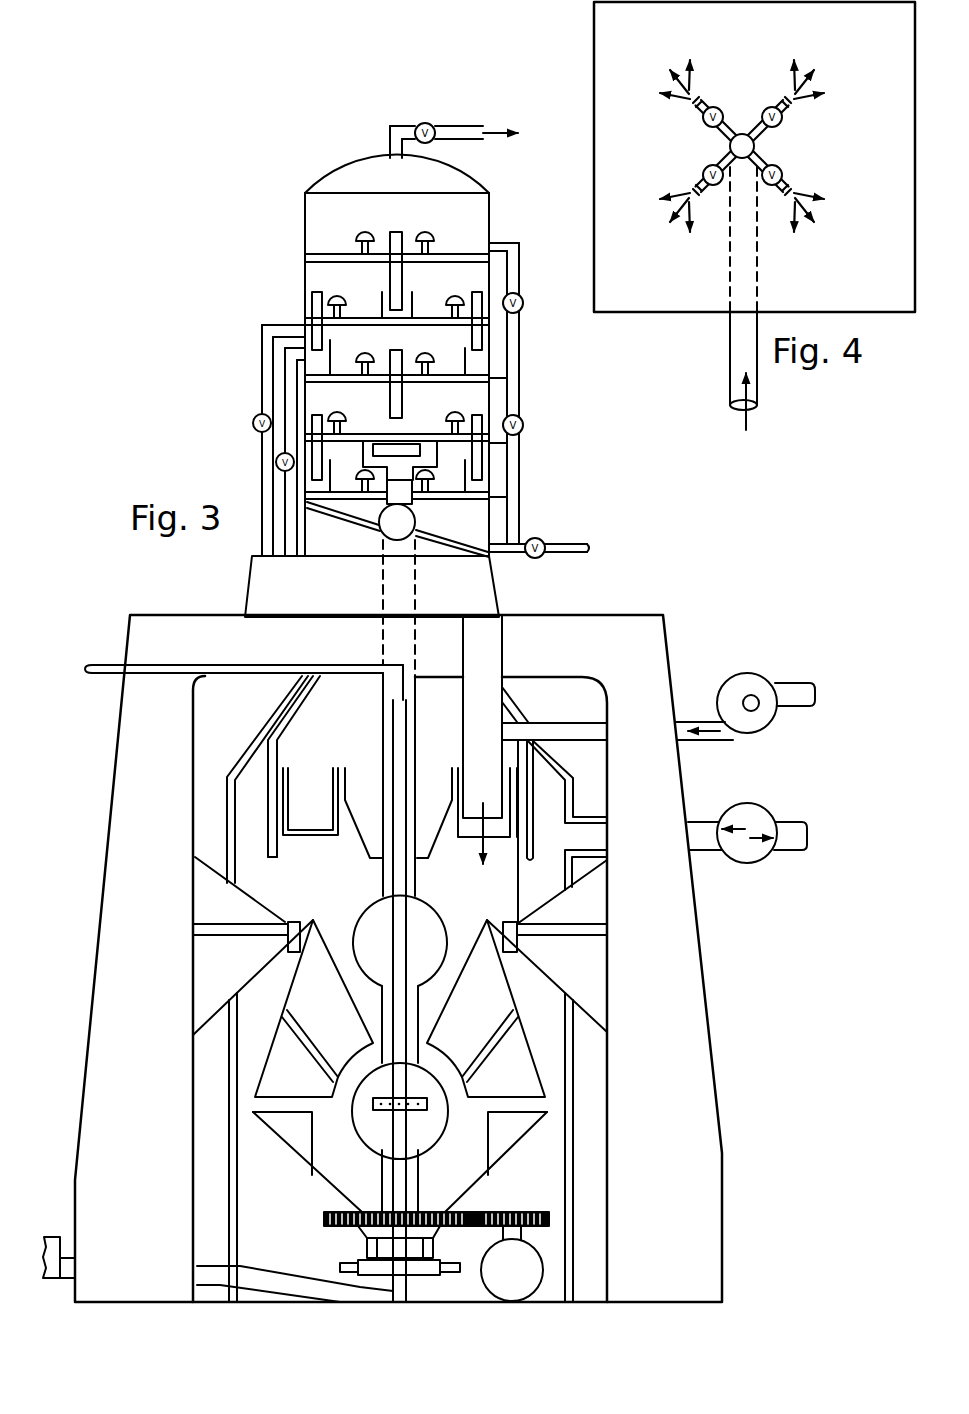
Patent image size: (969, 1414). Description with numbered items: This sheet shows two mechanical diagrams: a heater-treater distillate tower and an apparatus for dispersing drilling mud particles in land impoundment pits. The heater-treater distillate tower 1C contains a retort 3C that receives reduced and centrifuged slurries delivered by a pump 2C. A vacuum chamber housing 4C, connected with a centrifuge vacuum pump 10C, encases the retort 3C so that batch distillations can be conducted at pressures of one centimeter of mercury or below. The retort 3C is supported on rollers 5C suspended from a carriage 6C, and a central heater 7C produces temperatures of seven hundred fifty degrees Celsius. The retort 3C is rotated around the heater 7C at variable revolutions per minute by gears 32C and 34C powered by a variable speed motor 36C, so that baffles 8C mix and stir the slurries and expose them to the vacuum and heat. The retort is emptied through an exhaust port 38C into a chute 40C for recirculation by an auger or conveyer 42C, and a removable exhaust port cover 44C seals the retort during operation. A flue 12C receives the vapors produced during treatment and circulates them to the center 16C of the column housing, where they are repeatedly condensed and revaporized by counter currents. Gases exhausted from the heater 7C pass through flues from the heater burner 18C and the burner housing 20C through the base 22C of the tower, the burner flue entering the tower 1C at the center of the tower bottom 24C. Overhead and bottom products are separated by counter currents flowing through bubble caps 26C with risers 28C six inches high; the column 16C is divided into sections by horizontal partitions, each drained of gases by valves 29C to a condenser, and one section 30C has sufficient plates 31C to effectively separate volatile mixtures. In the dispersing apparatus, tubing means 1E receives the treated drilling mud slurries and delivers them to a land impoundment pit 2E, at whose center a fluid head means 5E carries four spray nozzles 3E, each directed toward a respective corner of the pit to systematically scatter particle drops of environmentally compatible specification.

In FIG. 3, the heater-treater distillate tower 1C is at (492, 206).
In FIG. 3, the section of the tower 30C is at (305, 226).
In FIG. 3, the plates 31C is at (455, 252).
In FIG. 3, the bubble caps 26C is at (452, 305).
In FIG. 3, the center of the column housing 16C is at (330, 362).
In FIG. 3, the risers 28C is at (372, 406).
In FIG. 3, the tower bottom 24C is at (383, 548).
In FIG. 3, the valves 29C is at (522, 298).
In FIG. 3, the base of the tower 22C is at (499, 596).
In FIG. 3, the carriage 6C is at (607, 1090).
In FIG. 3, the flue 12C is at (336, 680).
In FIG. 3, the vacuum chamber housing 4C is at (240, 858).
In FIG. 3, the rollers 5C is at (528, 922).
In FIG. 3, the baffles 8C is at (500, 945).
In FIG. 3, the burner housing 20C is at (440, 918).
In FIG. 3, the retort 3C is at (275, 1147).
In FIG. 3, the heater burner 18C is at (422, 1085).
In FIG. 3, the central heater 7C is at (405, 1110).
In FIG. 3, the gear 32C is at (324, 1222).
In FIG. 3, the gear 34C is at (535, 1212).
In FIG. 3, the removable exhaust port cover 44C is at (436, 1260).
In FIG. 3, the exhaust port 38C is at (405, 1275).
In FIG. 3, the variable speed motor 36C is at (545, 1258).
In FIG. 3, the chute 40C is at (283, 1280).
In FIG. 3, the auger or conveyer 42C is at (60, 1256).
In FIG. 3, the pump 2C is at (745, 673).
In FIG. 3, the centrifuge vacuum pump 10C is at (747, 803).
In FIG. 4, the land impoundment pit 2E is at (594, 64).
In FIG. 4, the spray nozzles 3E is at (786, 97).
In FIG. 4, the fluid head means 5E is at (710, 148).
In FIG. 4, the tubing means 1E is at (730, 352).